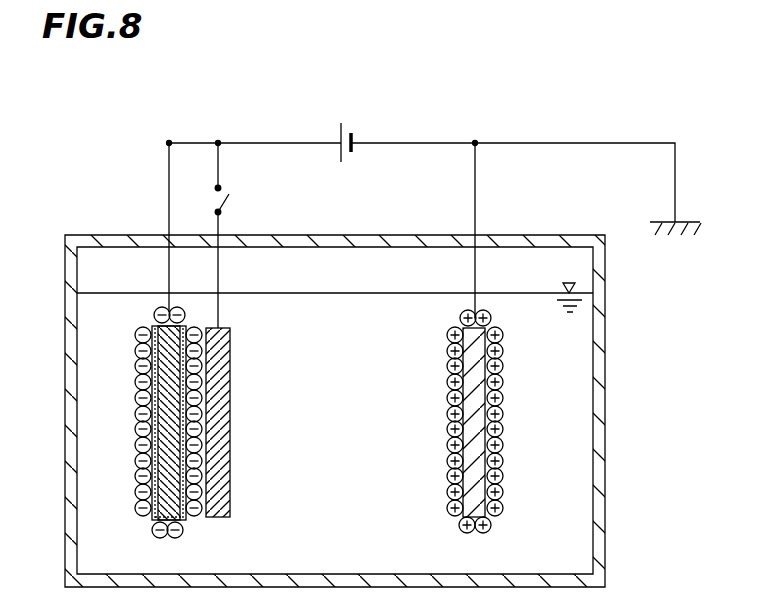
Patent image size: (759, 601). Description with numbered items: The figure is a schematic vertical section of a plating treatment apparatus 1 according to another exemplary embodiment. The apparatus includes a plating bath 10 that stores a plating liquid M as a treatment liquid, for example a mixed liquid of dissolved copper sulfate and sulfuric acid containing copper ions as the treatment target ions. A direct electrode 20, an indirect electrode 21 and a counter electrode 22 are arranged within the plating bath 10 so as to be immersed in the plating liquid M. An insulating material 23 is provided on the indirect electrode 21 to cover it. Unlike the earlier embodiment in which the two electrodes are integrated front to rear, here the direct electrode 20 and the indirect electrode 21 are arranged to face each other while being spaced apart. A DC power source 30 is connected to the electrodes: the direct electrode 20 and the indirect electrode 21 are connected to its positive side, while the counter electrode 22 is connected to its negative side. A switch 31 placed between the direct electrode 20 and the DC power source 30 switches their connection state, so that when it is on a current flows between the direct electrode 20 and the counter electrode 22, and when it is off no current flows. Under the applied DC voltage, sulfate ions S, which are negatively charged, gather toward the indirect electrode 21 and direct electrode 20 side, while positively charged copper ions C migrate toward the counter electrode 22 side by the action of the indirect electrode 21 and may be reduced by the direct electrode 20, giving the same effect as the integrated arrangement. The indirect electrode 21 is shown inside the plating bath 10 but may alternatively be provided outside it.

The plating treatment apparatus 1 is at (292, 106).
The plating bath 10 is at (600, 428).
The plating liquid M is at (580, 342).
The direct electrode 20 is at (222, 408).
The indirect electrode 21 is at (165, 410).
The counter electrode 22 is at (483, 410).
The insulating material 23 is at (155, 519).
The DC power source 30 is at (356, 134).
The switch 31 is at (223, 200).
The sulfate ions S is at (185, 535).
The copper ions C is at (455, 512).